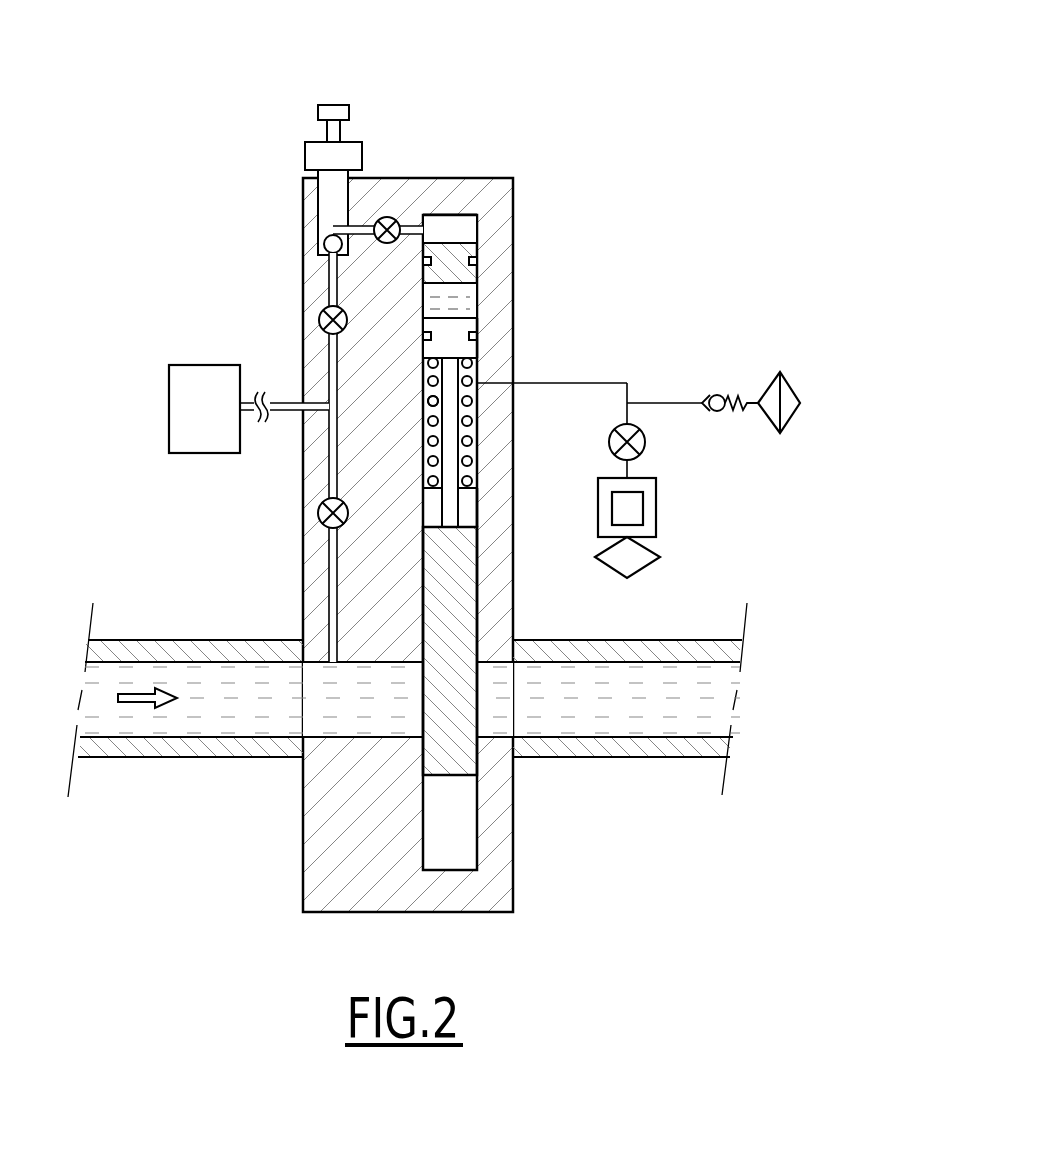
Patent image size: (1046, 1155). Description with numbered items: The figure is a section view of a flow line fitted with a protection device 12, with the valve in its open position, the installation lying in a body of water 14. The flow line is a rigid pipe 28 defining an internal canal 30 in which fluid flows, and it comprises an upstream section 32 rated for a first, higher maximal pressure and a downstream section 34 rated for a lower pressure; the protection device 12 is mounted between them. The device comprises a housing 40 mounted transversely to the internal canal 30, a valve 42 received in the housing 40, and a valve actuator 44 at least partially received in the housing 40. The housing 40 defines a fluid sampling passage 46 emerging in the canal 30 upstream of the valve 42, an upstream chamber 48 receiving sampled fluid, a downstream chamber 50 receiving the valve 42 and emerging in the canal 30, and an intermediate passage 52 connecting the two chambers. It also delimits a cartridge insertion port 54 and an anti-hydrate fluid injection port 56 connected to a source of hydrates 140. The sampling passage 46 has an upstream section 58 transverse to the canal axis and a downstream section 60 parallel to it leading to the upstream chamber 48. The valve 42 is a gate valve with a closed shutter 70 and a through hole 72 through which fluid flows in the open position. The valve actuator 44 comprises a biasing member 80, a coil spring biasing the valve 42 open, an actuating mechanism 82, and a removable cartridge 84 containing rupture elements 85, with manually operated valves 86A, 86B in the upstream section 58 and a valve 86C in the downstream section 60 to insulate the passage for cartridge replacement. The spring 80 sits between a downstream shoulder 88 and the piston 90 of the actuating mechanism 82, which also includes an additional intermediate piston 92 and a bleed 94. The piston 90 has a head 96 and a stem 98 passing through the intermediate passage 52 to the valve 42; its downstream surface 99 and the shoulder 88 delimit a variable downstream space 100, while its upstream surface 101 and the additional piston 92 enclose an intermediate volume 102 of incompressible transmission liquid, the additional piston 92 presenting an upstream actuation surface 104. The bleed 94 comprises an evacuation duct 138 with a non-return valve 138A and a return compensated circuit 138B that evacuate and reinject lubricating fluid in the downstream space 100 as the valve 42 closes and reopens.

The protection device 12 is at (545, 92).
The body of water 14 is at (97, 160).
The rigid pipe 28 is at (407, 654).
The internal canal 30 is at (222, 705).
The upstream section 32 is at (138, 757).
The downstream section 34 is at (642, 758).
The housing 40 is at (630, 225).
The valve 42 is at (510, 608).
The valve actuator 44 is at (555, 318).
The fluid sampling passage 46 is at (290, 340).
The upstream chamber 48 is at (512, 180).
The downstream chamber 50 is at (524, 675).
The intermediate passage 52 is at (478, 513).
The cartridge insertion port 54 is at (318, 208).
The anti-hydrate fluid injection port 56 is at (303, 427).
The upstream section of the fluid sampling passage 58 is at (325, 587).
The downstream section of the fluid sampling passage 60 is at (418, 224).
The closed shutter 70 is at (450, 637).
The through hole 72 is at (462, 712).
The biasing member 80 is at (470, 420).
The actuating mechanism 82 is at (440, 200).
The removable cartridge 84 is at (305, 187).
The rupture element 85 is at (323, 242).
The manually operated valve 86A is at (318, 503).
The manually operated valve 86B is at (319, 314).
The manually operated valve 86C is at (387, 218).
The downstream shoulder 88 is at (462, 423).
The piston 90 is at (478, 323).
The additional intermediate piston 92 is at (478, 233).
The bleed 94 is at (798, 340).
The head 96 is at (423, 358).
The stem 98 is at (442, 502).
The downstream surface 99 is at (478, 372).
The downstream space 100 is at (428, 398).
The upstream surface 101 is at (447, 312).
The intermediate volume 102 is at (478, 268).
The upstream actuation surface 104 is at (478, 218).
The evacuation duct 138 is at (683, 448).
The non-return valve 138A is at (706, 408).
The return compensated circuit 138B is at (656, 497).
The source of hydrates 140 is at (185, 390).